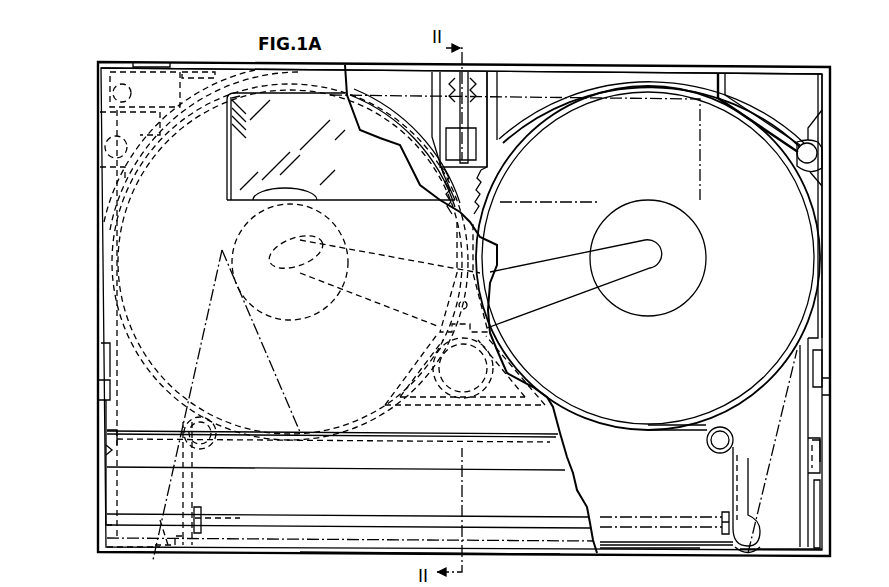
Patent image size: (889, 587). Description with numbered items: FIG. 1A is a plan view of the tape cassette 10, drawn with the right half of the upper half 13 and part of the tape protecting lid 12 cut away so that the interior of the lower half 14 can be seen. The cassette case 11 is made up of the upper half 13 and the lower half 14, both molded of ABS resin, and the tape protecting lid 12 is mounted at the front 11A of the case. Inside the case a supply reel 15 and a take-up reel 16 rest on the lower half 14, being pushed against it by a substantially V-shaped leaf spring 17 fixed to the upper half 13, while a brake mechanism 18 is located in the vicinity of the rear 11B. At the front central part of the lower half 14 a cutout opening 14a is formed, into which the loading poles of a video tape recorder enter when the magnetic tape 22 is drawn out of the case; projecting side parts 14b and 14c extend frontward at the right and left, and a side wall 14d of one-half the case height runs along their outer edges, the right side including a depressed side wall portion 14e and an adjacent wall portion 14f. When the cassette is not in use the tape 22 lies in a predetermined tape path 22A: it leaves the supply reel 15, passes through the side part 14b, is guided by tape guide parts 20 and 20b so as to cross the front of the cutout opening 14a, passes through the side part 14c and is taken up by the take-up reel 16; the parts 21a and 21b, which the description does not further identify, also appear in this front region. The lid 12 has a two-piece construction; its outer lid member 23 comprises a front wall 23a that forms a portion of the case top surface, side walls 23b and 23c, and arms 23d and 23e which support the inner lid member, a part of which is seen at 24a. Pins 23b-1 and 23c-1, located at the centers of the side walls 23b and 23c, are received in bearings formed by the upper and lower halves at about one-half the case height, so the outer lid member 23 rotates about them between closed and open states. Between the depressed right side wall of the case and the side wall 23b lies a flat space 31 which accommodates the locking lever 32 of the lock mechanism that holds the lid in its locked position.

The tape cassette 10 is at (672, 48).
The cassette case 11 is at (226, 63).
The front of the cassette case 11A is at (478, 553).
The rear of the cassette case 11B is at (487, 68).
The tape protecting lid 12 is at (566, 553).
The upper half 13 is at (859, 311).
The lower half 14 is at (732, 66).
The cutout opening 14a is at (636, 549).
The projecting side part 14b is at (782, 549).
The projecting side part 14c is at (106, 497).
The side wall 14d is at (830, 232).
The depressed side wall portion 14e is at (788, 442).
The wall projection 14f is at (826, 384).
The supply reel 15 is at (812, 189).
The take-up reel 16 is at (110, 272).
The V-shaped leaf spring 17 is at (546, 302).
The brake mechanism 18 is at (492, 142).
The lid lock member 20 is at (752, 552).
The tape guide part 20b is at (157, 562).
The tape guide roller 21a is at (728, 494).
The tape guide roller 21b is at (192, 490).
The magnetic tape 22 is at (772, 451).
The predetermined tape path 22A is at (672, 549).
The outer lid member 23 is at (295, 553).
The front wall 23a is at (326, 553).
The side wall 23b is at (828, 485).
The pin 23b-1 is at (822, 462).
The side wall 23c is at (107, 432).
The pin 23c-1 is at (106, 450).
The arm 23d is at (722, 547).
The arm 23e is at (218, 556).
The tape guide 24a is at (293, 431).
The flat space 31 is at (815, 517).
The locking lever 32 is at (822, 366).